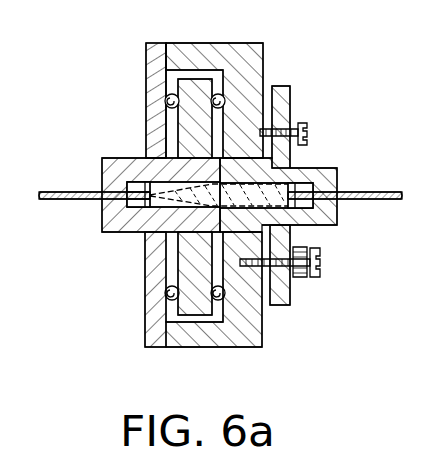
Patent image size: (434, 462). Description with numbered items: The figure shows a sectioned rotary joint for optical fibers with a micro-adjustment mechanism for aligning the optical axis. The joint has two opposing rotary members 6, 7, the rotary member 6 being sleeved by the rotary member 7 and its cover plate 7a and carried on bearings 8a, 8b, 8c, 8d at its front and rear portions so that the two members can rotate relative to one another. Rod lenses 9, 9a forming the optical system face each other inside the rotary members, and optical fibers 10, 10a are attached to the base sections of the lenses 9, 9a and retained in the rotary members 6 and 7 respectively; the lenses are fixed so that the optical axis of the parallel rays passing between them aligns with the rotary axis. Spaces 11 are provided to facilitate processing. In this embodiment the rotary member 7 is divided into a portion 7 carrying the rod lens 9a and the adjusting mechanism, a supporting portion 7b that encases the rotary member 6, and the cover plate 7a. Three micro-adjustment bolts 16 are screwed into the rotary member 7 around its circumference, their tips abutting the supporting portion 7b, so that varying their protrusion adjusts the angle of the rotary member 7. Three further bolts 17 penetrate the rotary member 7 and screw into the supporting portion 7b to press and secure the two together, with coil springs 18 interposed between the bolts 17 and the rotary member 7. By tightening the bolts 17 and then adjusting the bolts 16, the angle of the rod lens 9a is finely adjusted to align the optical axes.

The rotary member 6 is at (133, 225).
The rotary member 7 is at (339, 168).
The cover plate 7a is at (157, 63).
The supporting portion 7b is at (245, 50).
The bearing 8a is at (165, 101).
The bearing 8b is at (165, 294).
The bearing 8c is at (224, 97).
The bearing 8d is at (227, 301).
The rod lens 9 is at (156, 185).
The rod lens 9a is at (270, 188).
The optical fiber 10 is at (80, 190).
The optical fiber 10a is at (365, 192).
The space 11 is at (128, 205).
The micro-adjustment bolt 16 is at (305, 127).
The bolt 17 is at (319, 268).
The coil spring 18 is at (300, 278).